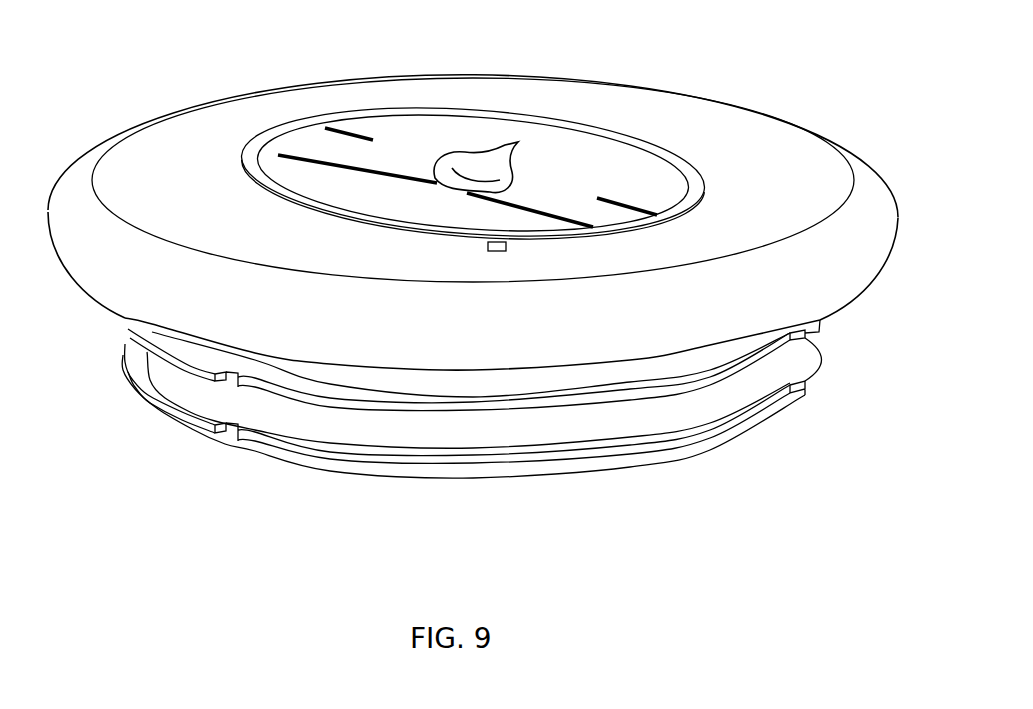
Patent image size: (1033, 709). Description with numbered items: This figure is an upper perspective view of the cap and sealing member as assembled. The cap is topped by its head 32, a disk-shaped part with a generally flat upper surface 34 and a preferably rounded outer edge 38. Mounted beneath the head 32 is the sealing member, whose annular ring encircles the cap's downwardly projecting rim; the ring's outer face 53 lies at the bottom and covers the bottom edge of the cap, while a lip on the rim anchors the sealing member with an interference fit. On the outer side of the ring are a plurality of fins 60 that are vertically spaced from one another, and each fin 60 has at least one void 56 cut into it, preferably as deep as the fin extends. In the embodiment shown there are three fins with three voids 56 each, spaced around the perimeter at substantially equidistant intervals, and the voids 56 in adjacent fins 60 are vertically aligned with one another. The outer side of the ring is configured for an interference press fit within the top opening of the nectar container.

The head 32 is at (500, 273).
The upper surface 34 is at (708, 123).
The rounded outer edge 38 is at (898, 223).
The outer face 53 is at (706, 452).
The void 56 is at (808, 392).
The fin 60 is at (813, 357).